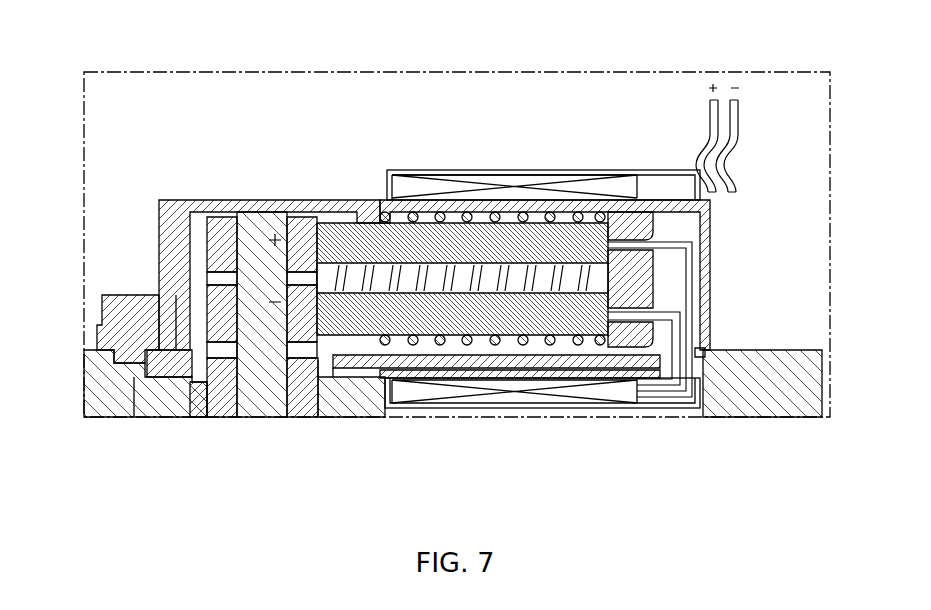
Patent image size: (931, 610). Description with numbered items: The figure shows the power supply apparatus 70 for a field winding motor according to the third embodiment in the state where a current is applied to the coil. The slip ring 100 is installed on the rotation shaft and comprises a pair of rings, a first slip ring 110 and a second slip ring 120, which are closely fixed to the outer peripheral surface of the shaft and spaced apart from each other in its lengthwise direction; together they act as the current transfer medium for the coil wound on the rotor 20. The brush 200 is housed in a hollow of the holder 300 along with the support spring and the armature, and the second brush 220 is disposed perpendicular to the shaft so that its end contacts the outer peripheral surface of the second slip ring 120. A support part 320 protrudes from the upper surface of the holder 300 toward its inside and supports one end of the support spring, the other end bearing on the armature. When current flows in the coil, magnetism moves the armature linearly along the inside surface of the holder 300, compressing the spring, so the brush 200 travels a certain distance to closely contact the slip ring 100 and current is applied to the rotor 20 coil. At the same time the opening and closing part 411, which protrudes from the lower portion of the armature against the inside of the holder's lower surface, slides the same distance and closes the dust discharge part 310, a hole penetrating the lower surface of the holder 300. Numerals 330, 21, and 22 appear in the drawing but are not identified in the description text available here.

The power supply apparatus 70 is at (315, 37).
The slip ring 100 is at (270, 147).
The first slip ring 110 is at (228, 224).
The second slip ring 120 is at (272, 216).
The brush 200 is at (708, 226).
The second brush 220 is at (367, 215).
The holder 300 is at (640, 115).
The dust discharge part 310 is at (630, 222).
The support part 320 is at (571, 185).
The ball bearing 330 is at (523, 216).
The rotor 20 is at (102, 232).
The lower bearing 21 is at (218, 312).
The upper bearing 22 is at (215, 244).
The opening and closing part 411 is at (627, 385).